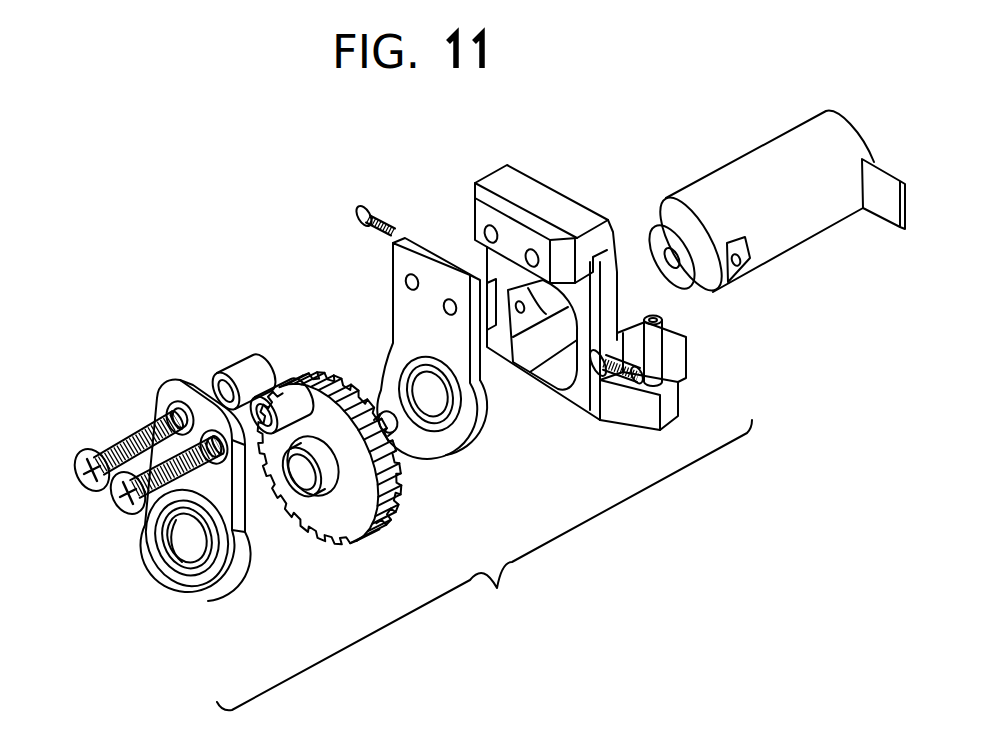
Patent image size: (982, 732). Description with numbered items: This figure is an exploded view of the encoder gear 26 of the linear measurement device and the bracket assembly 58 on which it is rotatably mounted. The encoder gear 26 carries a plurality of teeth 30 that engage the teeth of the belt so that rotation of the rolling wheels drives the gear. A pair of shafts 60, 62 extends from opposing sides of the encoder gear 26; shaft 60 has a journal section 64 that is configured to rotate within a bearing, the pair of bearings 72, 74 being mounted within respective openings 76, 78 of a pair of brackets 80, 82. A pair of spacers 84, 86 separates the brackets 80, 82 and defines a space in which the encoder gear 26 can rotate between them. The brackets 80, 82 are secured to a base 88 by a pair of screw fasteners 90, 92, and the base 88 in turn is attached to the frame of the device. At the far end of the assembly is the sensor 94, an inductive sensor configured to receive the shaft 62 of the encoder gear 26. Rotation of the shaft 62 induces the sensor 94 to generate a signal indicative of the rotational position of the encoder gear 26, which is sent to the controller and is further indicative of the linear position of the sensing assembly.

The encoder gear 26 is at (302, 366).
The teeth 30 is at (346, 380).
The bracket assembly 58 is at (484, 565).
The shaft 60 is at (310, 493).
The shaft 62 is at (398, 428).
The journal section 64 is at (360, 537).
The bearing 72 is at (180, 577).
The bearing 74 is at (491, 402).
The opening 76 is at (170, 541).
The opening 78 is at (400, 366).
The bracket 80 is at (253, 577).
The bracket 82 is at (497, 437).
The spacer 84 is at (222, 373).
The spacer 86 is at (280, 393).
The base 88 is at (507, 165).
The screw fastener 90 is at (77, 484).
The screw fastener 92 is at (127, 513).
The sensor 94 is at (668, 202).